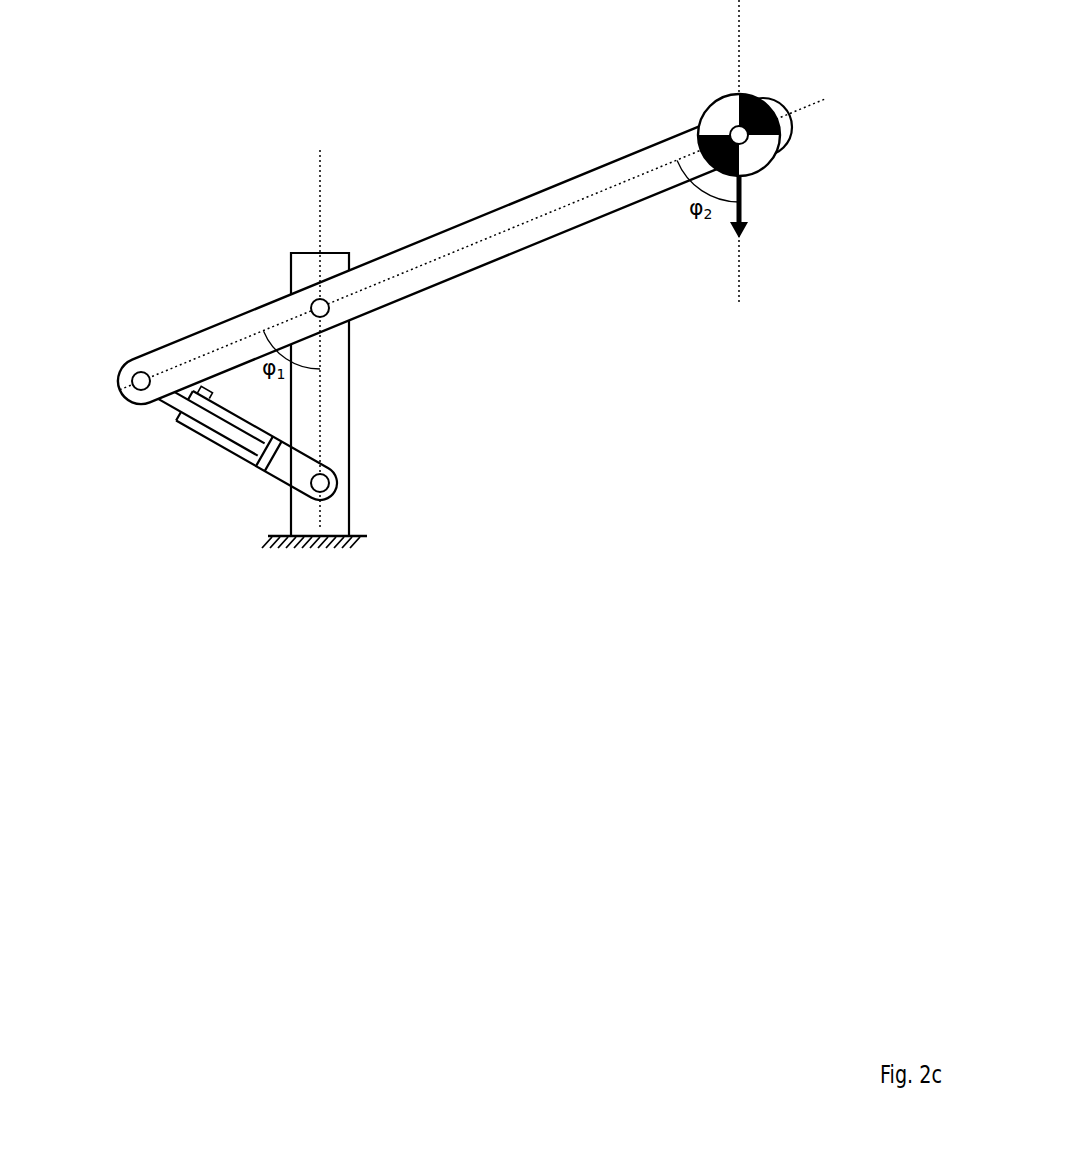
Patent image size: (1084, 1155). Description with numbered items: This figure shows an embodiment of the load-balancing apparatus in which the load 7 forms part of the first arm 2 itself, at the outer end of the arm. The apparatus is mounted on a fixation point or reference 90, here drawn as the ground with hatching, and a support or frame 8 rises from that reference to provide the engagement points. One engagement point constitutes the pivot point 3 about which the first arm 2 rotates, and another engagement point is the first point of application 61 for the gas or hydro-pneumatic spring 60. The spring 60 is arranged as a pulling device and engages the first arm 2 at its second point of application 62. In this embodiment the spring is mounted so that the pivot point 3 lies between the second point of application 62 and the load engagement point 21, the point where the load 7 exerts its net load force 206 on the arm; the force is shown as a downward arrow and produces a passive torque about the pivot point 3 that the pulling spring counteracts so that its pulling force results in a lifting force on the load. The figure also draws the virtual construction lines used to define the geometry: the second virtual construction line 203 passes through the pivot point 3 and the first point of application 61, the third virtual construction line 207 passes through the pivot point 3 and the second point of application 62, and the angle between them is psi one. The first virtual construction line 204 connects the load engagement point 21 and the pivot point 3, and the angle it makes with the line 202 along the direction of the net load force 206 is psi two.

The first arm 2 is at (242, 329).
The pivot point 3 is at (290, 292).
The load 7 is at (757, 147).
The support or frame 8 is at (305, 268).
The load engagement point 21 is at (745, 138).
The gas or hydro-pneumatic spring 60 is at (202, 435).
The first point of application 61 is at (310, 490).
The second point of application 62 is at (134, 385).
The fixation point or reference 90 is at (287, 543).
The line along the direction of the net load force 202 is at (739, 43).
The second virtual construction line 203 is at (318, 406).
The first virtual construction line 204 is at (840, 127).
The net load force 206 is at (745, 209).
The third virtual construction line 207 is at (802, 108).